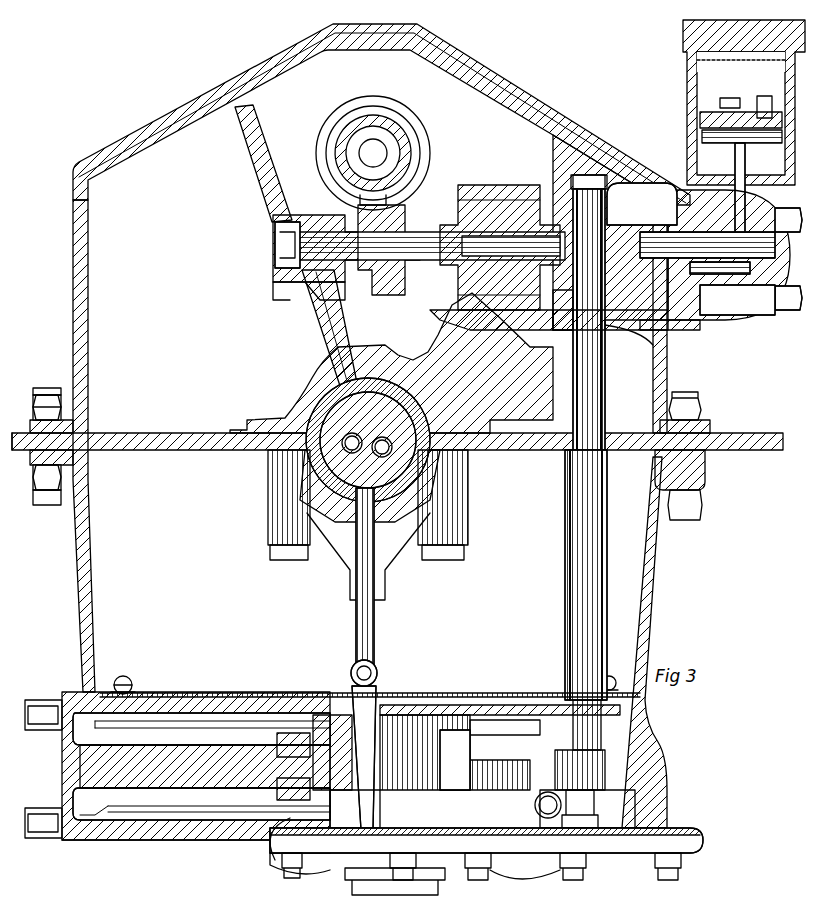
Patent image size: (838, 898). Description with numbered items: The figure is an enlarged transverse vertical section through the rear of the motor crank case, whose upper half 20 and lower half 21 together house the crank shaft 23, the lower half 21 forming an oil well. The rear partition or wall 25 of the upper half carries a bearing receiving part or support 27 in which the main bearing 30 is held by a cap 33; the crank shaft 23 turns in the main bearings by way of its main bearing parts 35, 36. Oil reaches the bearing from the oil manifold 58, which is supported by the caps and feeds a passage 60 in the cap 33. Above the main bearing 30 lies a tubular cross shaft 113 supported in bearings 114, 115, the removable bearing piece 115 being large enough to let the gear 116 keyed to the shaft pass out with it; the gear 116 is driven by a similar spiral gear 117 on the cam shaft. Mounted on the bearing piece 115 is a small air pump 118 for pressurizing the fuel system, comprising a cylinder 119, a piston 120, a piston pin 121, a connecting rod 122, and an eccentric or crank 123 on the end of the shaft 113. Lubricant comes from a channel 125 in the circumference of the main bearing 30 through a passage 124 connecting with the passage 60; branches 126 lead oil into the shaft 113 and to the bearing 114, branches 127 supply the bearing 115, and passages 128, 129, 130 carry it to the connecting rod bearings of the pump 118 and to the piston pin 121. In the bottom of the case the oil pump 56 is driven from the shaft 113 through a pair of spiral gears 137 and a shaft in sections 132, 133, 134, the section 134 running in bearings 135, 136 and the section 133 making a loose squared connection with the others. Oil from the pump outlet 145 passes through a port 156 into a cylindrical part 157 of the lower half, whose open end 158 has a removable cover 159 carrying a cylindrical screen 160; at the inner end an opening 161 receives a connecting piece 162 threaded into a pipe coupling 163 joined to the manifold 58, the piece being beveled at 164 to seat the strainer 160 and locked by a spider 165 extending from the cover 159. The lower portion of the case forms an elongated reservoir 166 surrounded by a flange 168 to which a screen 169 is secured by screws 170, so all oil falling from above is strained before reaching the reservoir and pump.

The upper half of the crank case 20 is at (73, 268).
The lower half of the crank case 21 is at (650, 598).
The crank shaft 23 is at (432, 424).
The rear partition or wall 25 is at (170, 310).
The bearing receiving part or support 27 is at (310, 398).
The bearing 30 is at (300, 463).
The cap 33 is at (405, 498).
The main bearing part of the crank shaft 35 is at (341, 673).
The main bearing part of the crank shaft 36 is at (440, 468).
The oil pump 56 is at (608, 802).
The oil manifold 58 is at (378, 670).
The passage 60 is at (372, 540).
The cross shaft 113 is at (487, 240).
The bearing 114 is at (292, 287).
The bearing piece 115 is at (700, 305).
The gear 116 is at (384, 293).
The spiral gear 117 is at (396, 190).
The air pump 118 is at (697, 118).
The cylinder 119 is at (690, 78).
The piston 120 is at (780, 72).
The piston pin 121 is at (760, 108).
The connecting rod 122 is at (759, 188).
The eccentric or crank 123 is at (740, 330).
The passage 124 is at (326, 335).
The channel 125 is at (342, 396).
The branches 126 is at (300, 225).
The branches 127 is at (660, 238).
The passage 128 is at (783, 284).
The passage 129 is at (790, 205).
The passage 130 is at (720, 140).
The driving shaft section 132 is at (590, 738).
The driving shaft section 133 is at (590, 562).
The driving shaft section 134 is at (590, 392).
The bearing 135 is at (558, 312).
The bearing 136 is at (601, 172).
The spiral gears 137 is at (545, 280).
The outlet 145 is at (282, 868).
The port 156 is at (270, 838).
The cylindrical part 157 is at (176, 835).
The open end 158 is at (78, 822).
The removable cover 159 is at (80, 760).
The cylindrical screen 160 is at (142, 810).
The opening 161 is at (355, 809).
The connecting piece 162 is at (322, 745).
The pipe coupling 163 is at (412, 735).
The beveled inner end 164 is at (278, 733).
The spider 165 is at (210, 765).
The reservoir 166 is at (610, 778).
The flange 168 is at (543, 710).
The screen 169 is at (463, 695).
The screws 170 is at (128, 677).